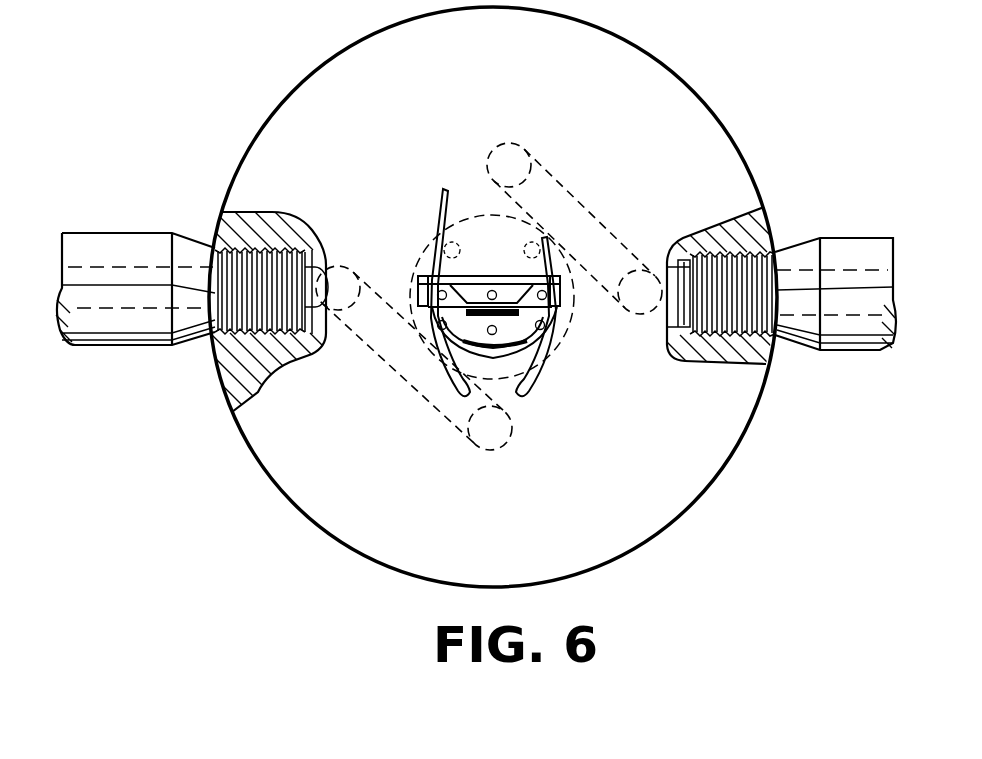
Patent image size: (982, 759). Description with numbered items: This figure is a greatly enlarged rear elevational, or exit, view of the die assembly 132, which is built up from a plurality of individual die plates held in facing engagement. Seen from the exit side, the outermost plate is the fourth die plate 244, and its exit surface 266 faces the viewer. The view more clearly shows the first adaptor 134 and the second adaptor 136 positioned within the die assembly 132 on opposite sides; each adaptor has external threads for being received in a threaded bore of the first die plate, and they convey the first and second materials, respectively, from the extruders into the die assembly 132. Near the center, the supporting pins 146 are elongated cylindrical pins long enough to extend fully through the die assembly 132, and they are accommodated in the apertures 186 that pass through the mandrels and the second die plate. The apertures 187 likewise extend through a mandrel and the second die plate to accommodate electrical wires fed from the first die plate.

The fourth die plate 244 is at (670, 97).
The exit surface 266 is at (730, 183).
The die assembly 132 is at (281, 457).
The second adaptor 136 is at (110, 250).
The first adaptor 134 is at (850, 258).
The aperture 186 is at (553, 313).
The supporting pin 146 is at (550, 330).
The aperture 187 is at (424, 262).